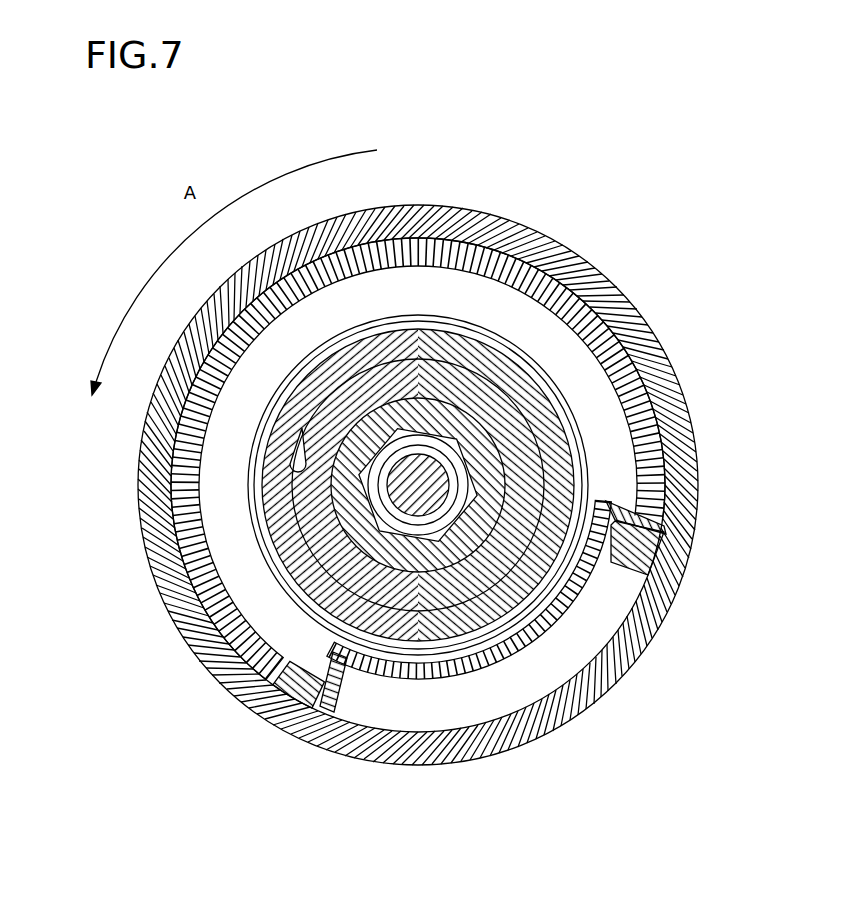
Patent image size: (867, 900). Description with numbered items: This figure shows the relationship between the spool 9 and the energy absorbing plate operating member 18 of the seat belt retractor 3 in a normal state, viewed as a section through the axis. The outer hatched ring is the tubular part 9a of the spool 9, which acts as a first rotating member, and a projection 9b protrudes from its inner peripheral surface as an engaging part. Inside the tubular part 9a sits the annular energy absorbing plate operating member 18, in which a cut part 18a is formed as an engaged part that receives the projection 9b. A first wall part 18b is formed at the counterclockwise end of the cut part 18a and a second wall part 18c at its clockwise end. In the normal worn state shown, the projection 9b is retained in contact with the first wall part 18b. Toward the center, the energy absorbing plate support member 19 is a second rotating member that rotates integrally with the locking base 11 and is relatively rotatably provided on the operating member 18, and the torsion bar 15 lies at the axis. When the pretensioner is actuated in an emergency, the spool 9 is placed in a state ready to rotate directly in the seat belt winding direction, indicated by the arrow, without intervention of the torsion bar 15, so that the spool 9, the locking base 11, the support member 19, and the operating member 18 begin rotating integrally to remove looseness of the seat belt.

The seat belt retractor 3 is at (590, 234).
The spool 9 is at (470, 371).
The tubular part 9a is at (468, 225).
The projection 9b is at (623, 560).
The locking base 11 is at (490, 490).
The torsion bar 15 is at (413, 483).
The energy absorbing plate operating member 18 is at (420, 240).
The cut part 18a is at (556, 680).
The first wall part 18b is at (650, 545).
The second wall part 18c is at (335, 703).
The energy absorbing plate support member 19 is at (523, 425).